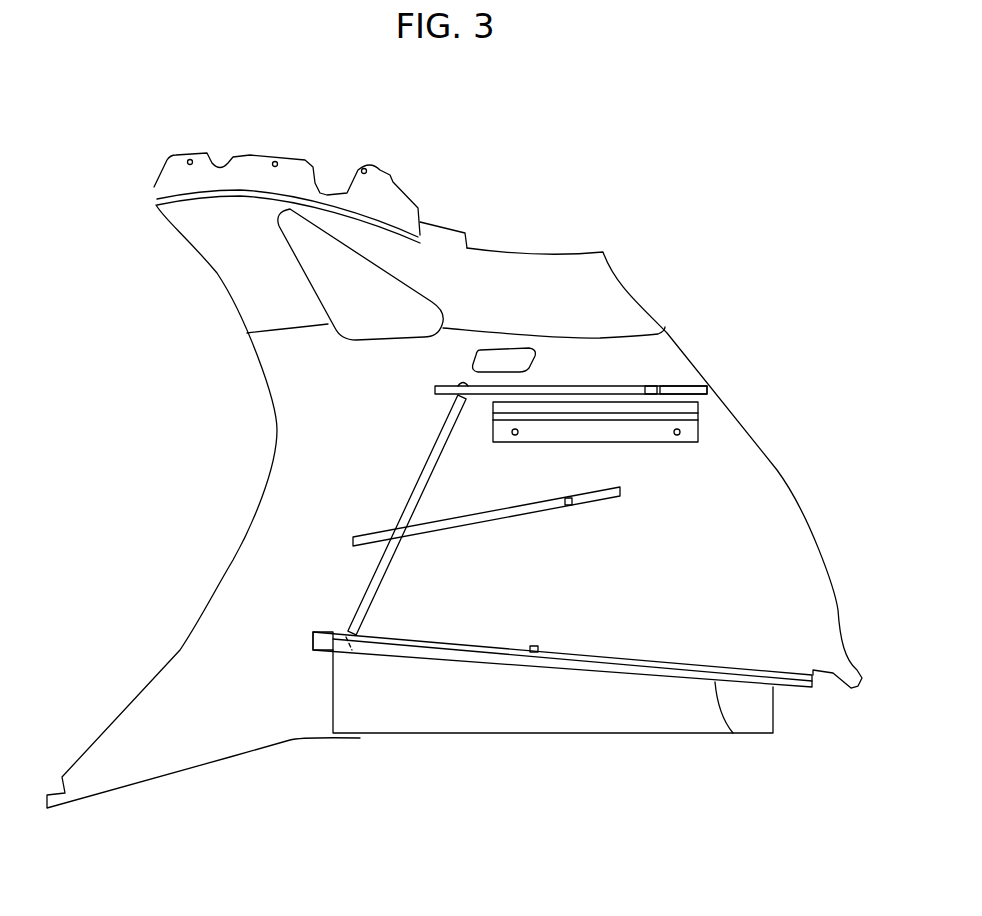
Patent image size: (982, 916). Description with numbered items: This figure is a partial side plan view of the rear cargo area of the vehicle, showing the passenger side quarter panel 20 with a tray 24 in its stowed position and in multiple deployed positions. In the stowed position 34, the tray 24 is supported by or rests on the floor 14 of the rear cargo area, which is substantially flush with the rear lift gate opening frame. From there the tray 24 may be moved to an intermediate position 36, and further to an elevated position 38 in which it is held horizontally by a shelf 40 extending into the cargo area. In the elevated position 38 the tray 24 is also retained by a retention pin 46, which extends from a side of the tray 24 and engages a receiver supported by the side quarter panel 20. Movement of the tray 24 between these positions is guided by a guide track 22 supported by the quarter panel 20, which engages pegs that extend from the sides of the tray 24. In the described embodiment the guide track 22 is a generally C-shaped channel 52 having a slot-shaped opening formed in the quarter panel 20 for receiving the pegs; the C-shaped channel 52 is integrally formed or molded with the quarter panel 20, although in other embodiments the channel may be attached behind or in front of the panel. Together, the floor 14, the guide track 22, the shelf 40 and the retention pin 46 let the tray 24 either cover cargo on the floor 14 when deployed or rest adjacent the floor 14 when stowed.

The floor 14 is at (733, 733).
The passenger side quarter panel 20 is at (517, 588).
The guide track 22 is at (413, 470).
The tray 24 is at (613, 386).
The stowed position 34 is at (316, 636).
The intermediate position 36 is at (361, 538).
The elevated position 38 is at (683, 385).
The shelf 40 is at (698, 413).
The retention pin 46 is at (652, 386).
The C-shaped channel 52 is at (350, 647).